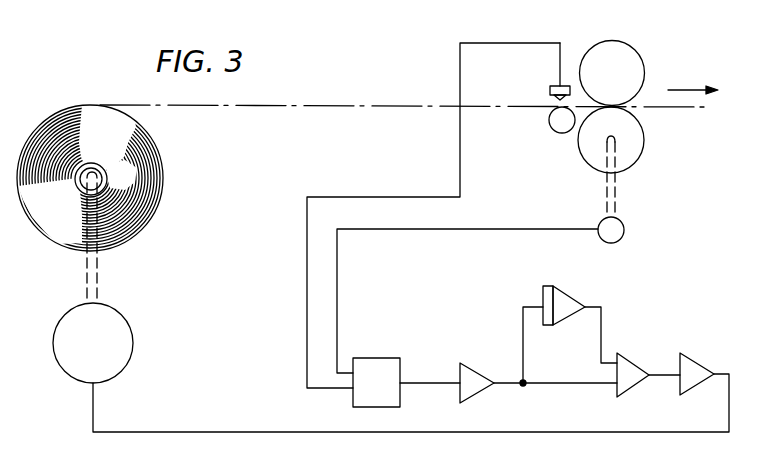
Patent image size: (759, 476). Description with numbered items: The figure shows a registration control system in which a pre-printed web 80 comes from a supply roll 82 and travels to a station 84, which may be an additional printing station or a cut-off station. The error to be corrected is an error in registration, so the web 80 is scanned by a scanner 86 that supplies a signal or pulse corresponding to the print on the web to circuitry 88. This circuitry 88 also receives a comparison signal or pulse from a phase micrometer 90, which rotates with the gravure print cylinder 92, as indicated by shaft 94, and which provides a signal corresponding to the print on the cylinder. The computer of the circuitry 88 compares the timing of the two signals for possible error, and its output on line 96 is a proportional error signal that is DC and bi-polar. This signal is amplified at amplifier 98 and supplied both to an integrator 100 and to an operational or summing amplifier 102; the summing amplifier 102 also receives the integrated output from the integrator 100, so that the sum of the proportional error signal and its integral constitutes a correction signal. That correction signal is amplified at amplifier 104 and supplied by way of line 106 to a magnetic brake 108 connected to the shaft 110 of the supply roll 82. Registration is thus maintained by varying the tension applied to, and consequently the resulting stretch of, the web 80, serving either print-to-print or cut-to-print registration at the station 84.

The web 80 is at (341, 104).
The supply roll 82 is at (162, 205).
The station 84 is at (615, 39).
The scanner 86 is at (550, 89).
The circuitry 88 is at (381, 352).
The phase micrometer 90 is at (624, 235).
The gravure print cylinder 92 is at (640, 155).
The shaft 94 is at (616, 192).
The line 96 is at (421, 382).
The amplifier 98 is at (493, 372).
The integrator 100 is at (577, 277).
The operational or summing amplifier 102 is at (627, 390).
The amplifier 104 is at (690, 358).
The line 106 is at (280, 433).
The magnetic brake 108 is at (133, 358).
The shaft 110 is at (98, 280).